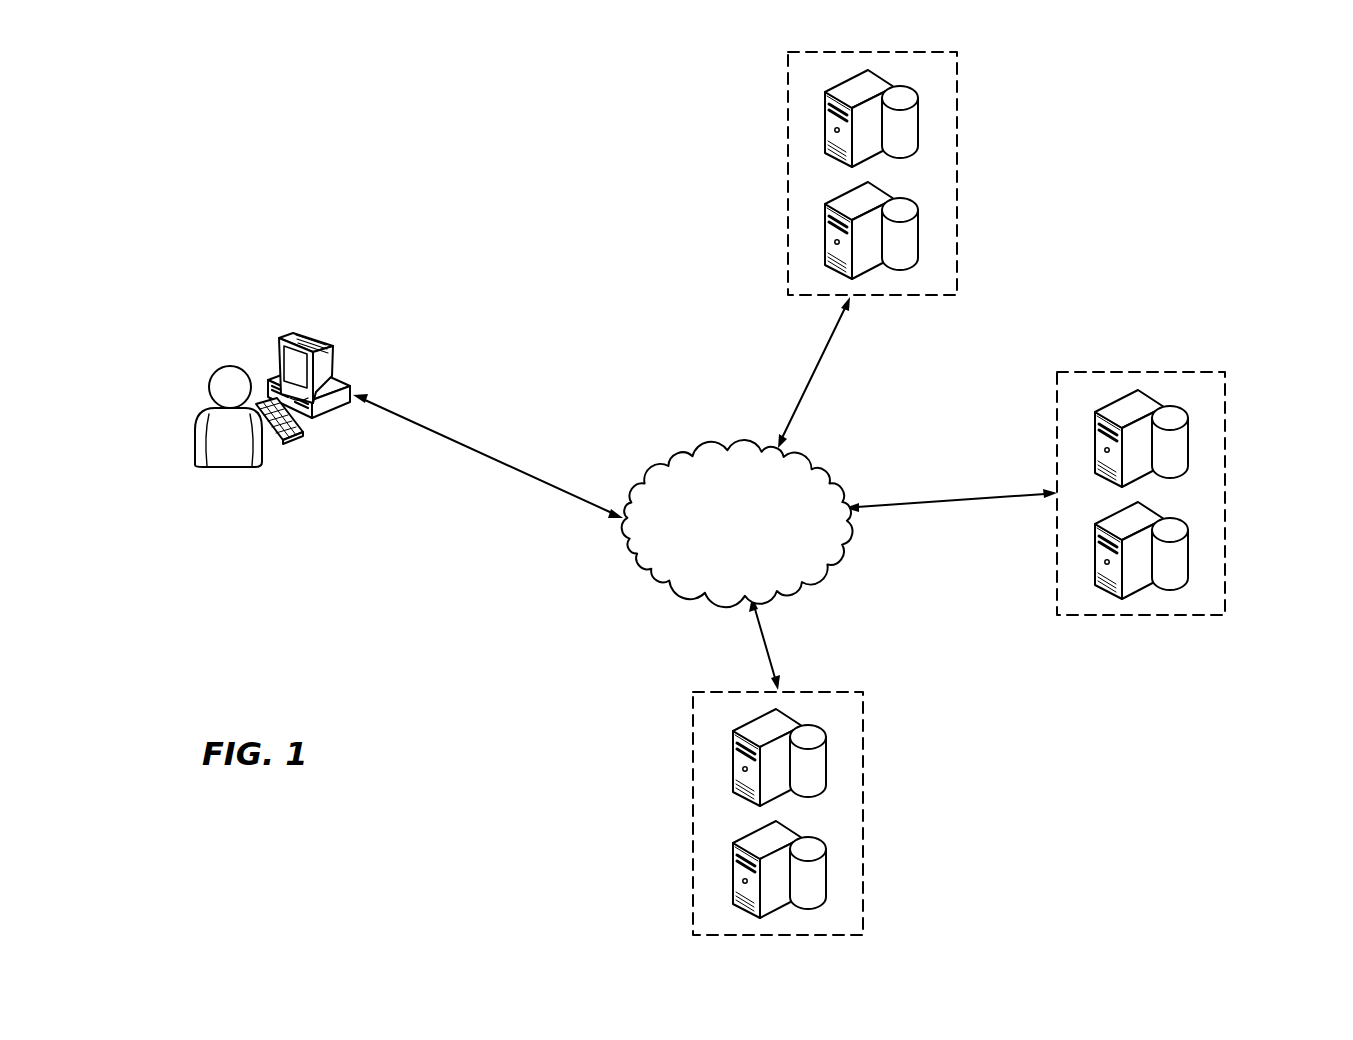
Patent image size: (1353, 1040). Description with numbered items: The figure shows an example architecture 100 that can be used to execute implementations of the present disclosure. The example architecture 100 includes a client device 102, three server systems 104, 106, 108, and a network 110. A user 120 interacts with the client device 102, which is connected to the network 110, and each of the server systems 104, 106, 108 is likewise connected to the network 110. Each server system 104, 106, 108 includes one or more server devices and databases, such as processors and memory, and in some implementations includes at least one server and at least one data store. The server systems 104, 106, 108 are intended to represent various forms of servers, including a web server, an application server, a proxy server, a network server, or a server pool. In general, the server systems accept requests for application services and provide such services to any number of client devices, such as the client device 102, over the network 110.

The example architecture 100 is at (582, 200).
The client device 102 is at (278, 340).
The server system 104 is at (957, 175).
The server system 106 is at (1225, 493).
The server system 108 is at (863, 812).
The network 110 is at (732, 448).
The user 120 is at (230, 467).